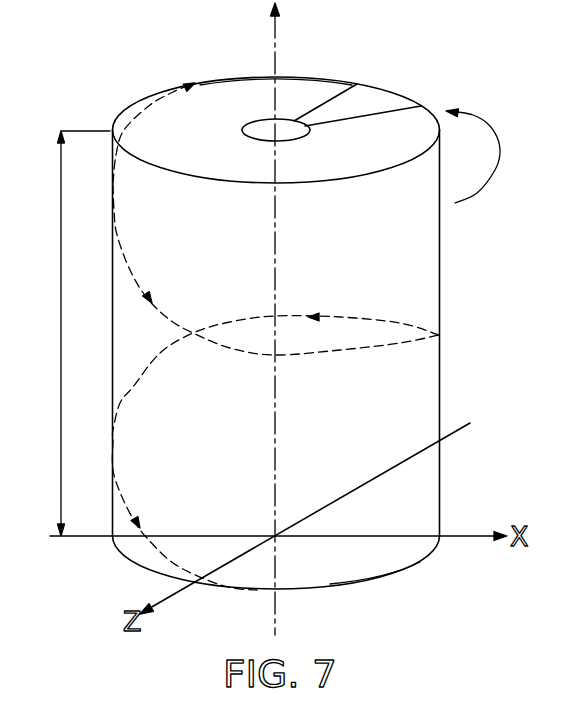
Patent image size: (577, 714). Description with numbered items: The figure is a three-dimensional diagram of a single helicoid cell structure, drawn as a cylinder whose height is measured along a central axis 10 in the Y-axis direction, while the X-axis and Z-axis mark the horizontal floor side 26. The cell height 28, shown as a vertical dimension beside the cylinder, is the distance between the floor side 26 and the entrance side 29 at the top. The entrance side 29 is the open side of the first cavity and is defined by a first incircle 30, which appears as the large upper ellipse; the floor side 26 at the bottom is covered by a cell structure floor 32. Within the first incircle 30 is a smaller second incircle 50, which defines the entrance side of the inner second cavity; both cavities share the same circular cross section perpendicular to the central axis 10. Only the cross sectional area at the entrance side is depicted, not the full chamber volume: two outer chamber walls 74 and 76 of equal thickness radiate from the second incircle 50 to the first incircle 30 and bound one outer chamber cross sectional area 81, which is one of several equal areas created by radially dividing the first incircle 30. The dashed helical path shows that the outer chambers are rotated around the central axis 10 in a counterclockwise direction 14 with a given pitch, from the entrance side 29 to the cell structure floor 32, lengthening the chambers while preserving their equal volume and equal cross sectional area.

The central axis 10 is at (276, 47).
The counterclockwise direction 14 is at (500, 156).
The floor side 26 is at (425, 557).
The cell height 28 is at (77, 333).
The entrance side 29 is at (199, 98).
The first incircle 30 is at (317, 78).
The cell structure floor 32 is at (397, 563).
The second incircle 50 is at (243, 130).
The outer chamber wall 74 is at (337, 88).
The outer chamber wall 76 is at (393, 110).
The outer chamber cross sectional area 81 is at (360, 105).